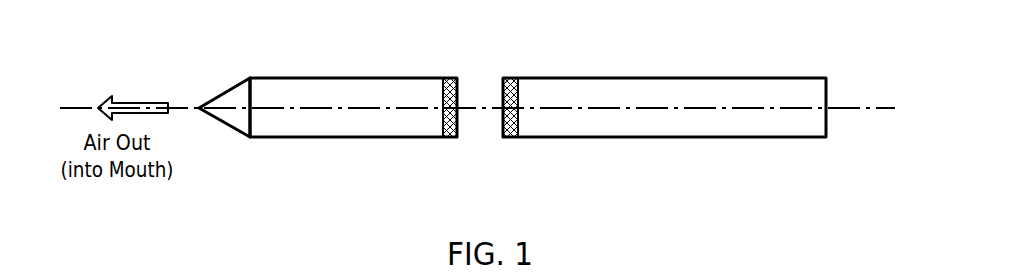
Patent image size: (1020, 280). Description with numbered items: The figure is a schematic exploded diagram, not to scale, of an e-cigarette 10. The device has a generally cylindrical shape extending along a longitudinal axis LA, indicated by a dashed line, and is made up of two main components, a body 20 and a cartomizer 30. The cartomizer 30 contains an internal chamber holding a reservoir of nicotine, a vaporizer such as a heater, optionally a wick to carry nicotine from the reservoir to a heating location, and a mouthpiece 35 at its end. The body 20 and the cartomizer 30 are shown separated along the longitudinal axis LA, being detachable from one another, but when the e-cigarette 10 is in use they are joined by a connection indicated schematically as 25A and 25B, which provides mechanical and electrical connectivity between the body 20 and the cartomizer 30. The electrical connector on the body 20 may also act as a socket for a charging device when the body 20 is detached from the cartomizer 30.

The e-cigarette 10 is at (489, 126).
The body 20 is at (658, 138).
The connection 25A is at (455, 138).
The connection 25B is at (508, 78).
The cartomizer 30 is at (297, 77).
The mouthpiece 35 is at (225, 107).
The longitudinal axis LA is at (477, 91).